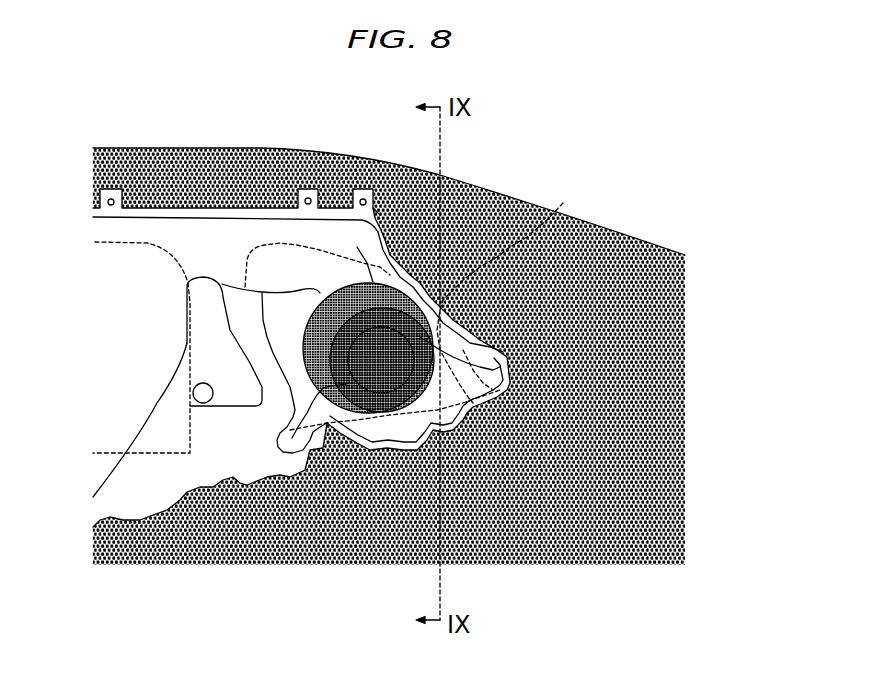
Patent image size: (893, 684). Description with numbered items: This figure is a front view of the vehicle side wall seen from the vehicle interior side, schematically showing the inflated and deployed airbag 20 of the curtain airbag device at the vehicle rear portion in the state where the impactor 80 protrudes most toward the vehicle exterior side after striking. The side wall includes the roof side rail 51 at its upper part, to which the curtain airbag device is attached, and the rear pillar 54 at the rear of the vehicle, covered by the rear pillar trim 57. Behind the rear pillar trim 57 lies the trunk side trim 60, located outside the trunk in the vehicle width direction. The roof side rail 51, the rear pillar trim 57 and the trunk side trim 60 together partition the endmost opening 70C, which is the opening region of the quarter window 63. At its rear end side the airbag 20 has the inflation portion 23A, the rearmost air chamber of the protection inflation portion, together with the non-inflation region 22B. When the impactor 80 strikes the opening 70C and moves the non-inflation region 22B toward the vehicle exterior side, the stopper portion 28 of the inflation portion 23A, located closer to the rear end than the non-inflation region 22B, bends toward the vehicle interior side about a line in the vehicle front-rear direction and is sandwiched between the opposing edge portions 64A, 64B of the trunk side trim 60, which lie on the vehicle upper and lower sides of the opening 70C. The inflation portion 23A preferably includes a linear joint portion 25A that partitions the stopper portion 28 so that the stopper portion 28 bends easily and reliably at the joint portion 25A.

The airbag 20 is at (145, 195).
The roof side rail 51 is at (183, 163).
The non-inflation region 22B is at (277, 297).
The opening 70C is at (319, 256).
The impactor 80 is at (342, 300).
The inflation portion 23A is at (385, 275).
The edge portion 64A is at (563, 203).
The edge portion 64B is at (440, 413).
The stopper portion 28 is at (475, 353).
The joint portion 25A is at (503, 389).
The rear pillar 54 is at (208, 418).
The rear pillar trim 57 is at (242, 402).
The quarter window 63 is at (320, 430).
The trunk side trim 60 is at (347, 500).